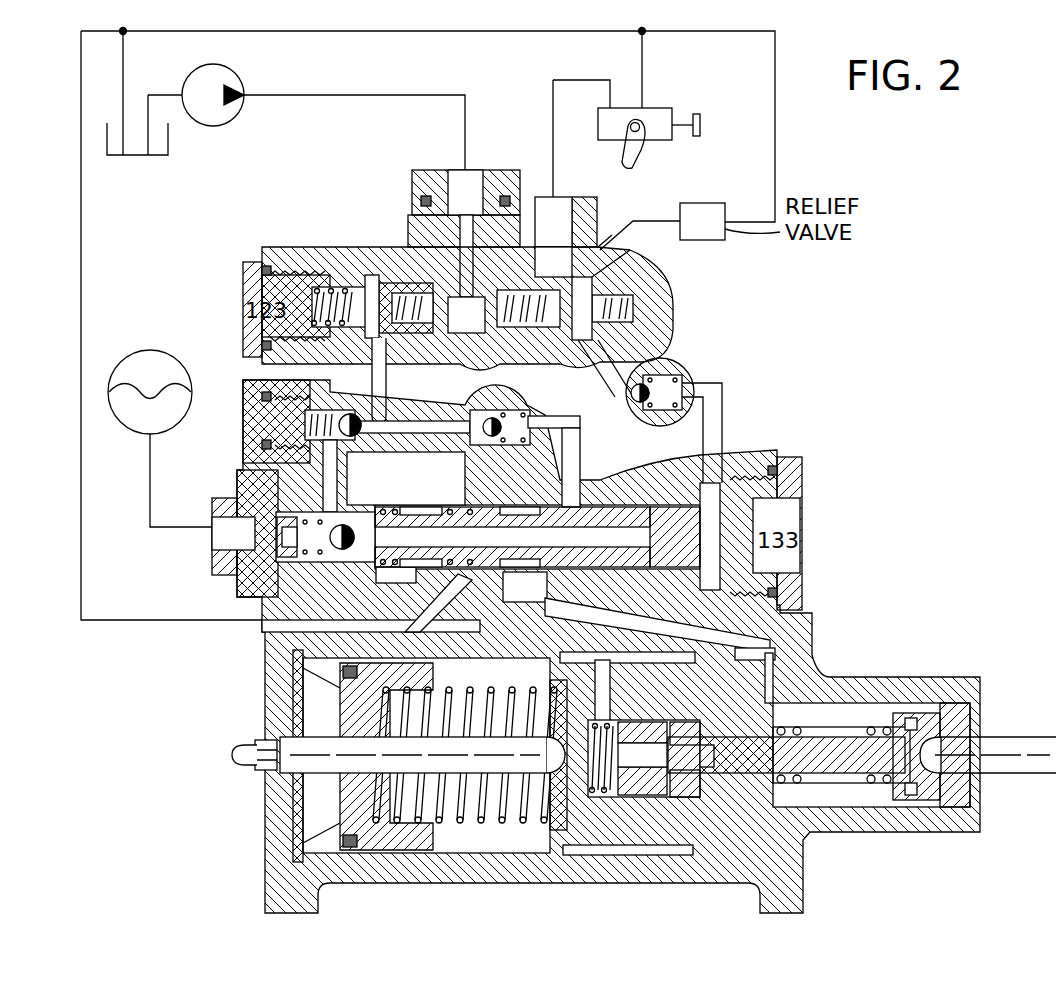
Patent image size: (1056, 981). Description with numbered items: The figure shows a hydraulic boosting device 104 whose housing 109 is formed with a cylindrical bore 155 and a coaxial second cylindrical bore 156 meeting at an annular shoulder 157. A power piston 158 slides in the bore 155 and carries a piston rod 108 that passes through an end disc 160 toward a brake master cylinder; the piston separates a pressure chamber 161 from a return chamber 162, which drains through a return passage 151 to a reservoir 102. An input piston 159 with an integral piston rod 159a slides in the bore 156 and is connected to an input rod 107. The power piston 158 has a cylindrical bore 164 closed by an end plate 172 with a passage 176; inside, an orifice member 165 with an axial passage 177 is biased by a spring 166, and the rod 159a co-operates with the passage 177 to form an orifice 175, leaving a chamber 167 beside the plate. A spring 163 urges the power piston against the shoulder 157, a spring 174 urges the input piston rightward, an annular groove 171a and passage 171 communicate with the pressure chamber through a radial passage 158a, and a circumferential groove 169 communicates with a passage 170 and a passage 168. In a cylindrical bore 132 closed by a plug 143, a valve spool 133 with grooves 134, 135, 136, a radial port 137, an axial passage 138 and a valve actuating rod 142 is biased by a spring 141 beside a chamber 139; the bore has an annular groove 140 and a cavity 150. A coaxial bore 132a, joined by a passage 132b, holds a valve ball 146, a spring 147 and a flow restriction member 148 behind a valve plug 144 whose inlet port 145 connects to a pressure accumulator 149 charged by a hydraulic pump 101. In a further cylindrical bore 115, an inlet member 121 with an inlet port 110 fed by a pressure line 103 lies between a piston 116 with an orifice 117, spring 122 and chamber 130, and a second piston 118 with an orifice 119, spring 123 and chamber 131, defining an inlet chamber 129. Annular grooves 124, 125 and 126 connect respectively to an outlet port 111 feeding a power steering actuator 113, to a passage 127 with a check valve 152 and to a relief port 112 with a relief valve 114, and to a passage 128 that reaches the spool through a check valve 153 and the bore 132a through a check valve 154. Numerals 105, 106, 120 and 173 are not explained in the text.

The hydraulic pump 101 is at (213, 126).
The reservoir 102 is at (155, 160).
The pressure line 103 is at (465, 128).
The boosting device 104 is at (860, 666).
The pressure regulator section 105 is at (820, 519).
The control valve body 106 is at (702, 282).
The input rod 107 is at (1020, 745).
The piston rod 108 is at (374, 745).
The housing 109 is at (950, 680).
The inlet port 110 is at (472, 170).
The outlet port 111 is at (560, 200).
The relief port 112 is at (605, 262).
The power steering actuator 113 is at (652, 135).
The relief valve 114 is at (707, 203).
The cylindrical bore 115 is at (430, 290).
The piston 116 is at (568, 262).
The orifice 117 is at (470, 333).
The second piston 118 is at (393, 262).
The orifice 119 is at (404, 333).
The housing end 120 is at (246, 262).
The inlet member 121 is at (412, 190).
The spring 122 is at (625, 303).
The spring 123 is at (300, 315).
The annular groove 124 is at (538, 360).
The annular groove 125 is at (598, 268).
The annular groove 126 is at (366, 260).
The passage 127 is at (620, 385).
The passage 128 is at (375, 388).
The inlet chamber 129 is at (458, 365).
The chamber 130 is at (608, 290).
The chamber 131 is at (333, 250).
The cylindrical bore 132 is at (405, 578).
The bore 132a is at (380, 630).
The passage 132b is at (358, 582).
The valve spool 133 is at (705, 545).
The circumferential groove 134 is at (583, 492).
The circumferential groove 135 is at (548, 450).
The circumferential groove 136 is at (462, 500).
The radial port 137 is at (543, 566).
The axial passage 138 is at (440, 583).
The chamber 139 is at (366, 553).
The annular groove 140 is at (657, 472).
The spring 141 is at (415, 498).
The valve actuating rod 142 is at (338, 512).
The plug 143 is at (770, 453).
The valve plug 144 is at (240, 570).
The inlet port 145 is at (212, 533).
The valve ball 146 is at (356, 436).
The spring 147 is at (325, 482).
The flow restriction member 148 is at (275, 505).
The pressure accumulator 149 is at (137, 432).
The cavity 150 is at (545, 599).
The return passage 151 is at (440, 622).
The check valve 152 is at (630, 400).
The check valve 153 is at (468, 427).
The check valve 154 is at (305, 427).
The cylindrical bore 155 is at (510, 853).
The second cylindrical bore 156 is at (910, 810).
The annular shoulder 157 is at (812, 847).
The power piston 158 is at (790, 862).
The radial passage 158a is at (875, 712).
The input piston 159 is at (955, 810).
The piston rod 159a is at (866, 790).
The end disc 160 is at (357, 830).
The pressure chamber 161 is at (869, 722).
The return chamber 162 is at (476, 850).
The spring 163 is at (450, 825).
The cylindrical bore 164 is at (636, 797).
The orifice member 165 is at (668, 777).
The spring 166 is at (592, 790).
The chamber 167 is at (591, 720).
The passage 168 is at (572, 657).
The circumferential groove 169 is at (646, 856).
The passage 170 is at (693, 605).
The passage 171 is at (795, 618).
The annular groove 171a is at (795, 650).
The end plate 172 is at (760, 802).
The seal 173 is at (716, 792).
The spring 174 is at (900, 757).
The orifice 175 is at (697, 735).
The passage 176 is at (765, 703).
The axial passage 177 is at (670, 737).